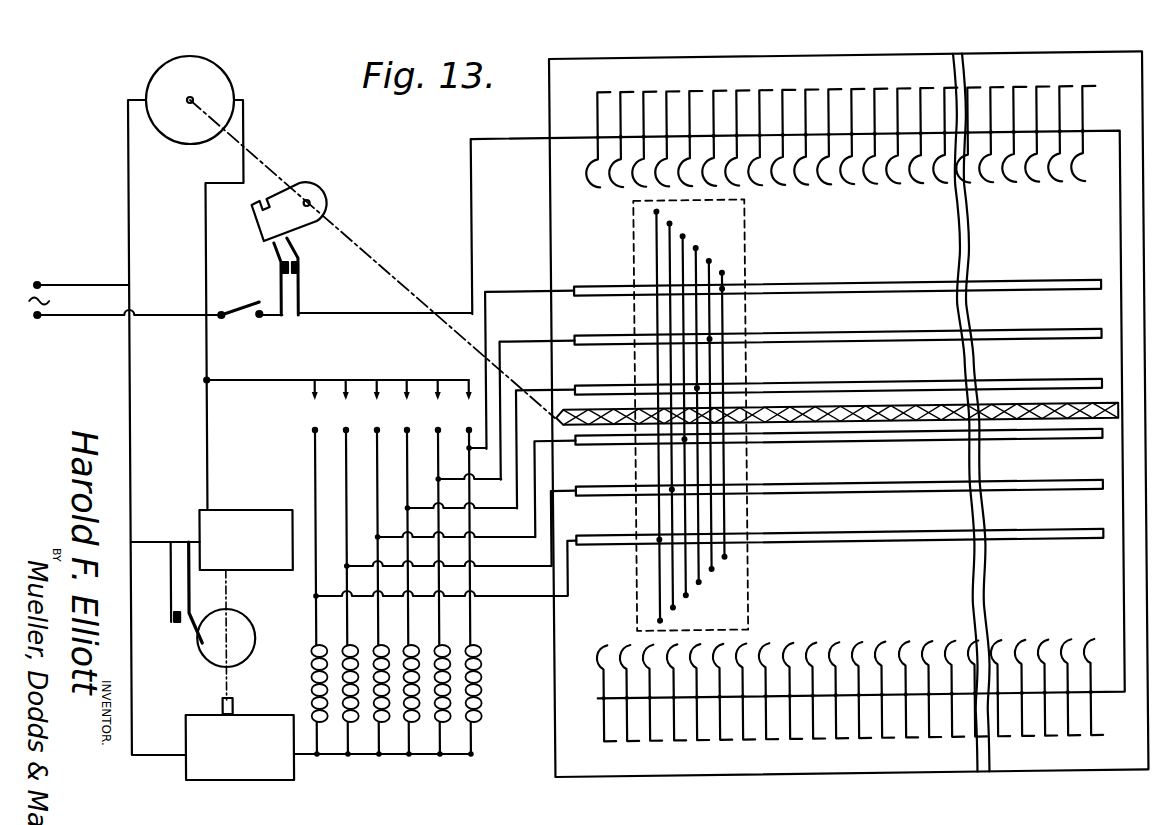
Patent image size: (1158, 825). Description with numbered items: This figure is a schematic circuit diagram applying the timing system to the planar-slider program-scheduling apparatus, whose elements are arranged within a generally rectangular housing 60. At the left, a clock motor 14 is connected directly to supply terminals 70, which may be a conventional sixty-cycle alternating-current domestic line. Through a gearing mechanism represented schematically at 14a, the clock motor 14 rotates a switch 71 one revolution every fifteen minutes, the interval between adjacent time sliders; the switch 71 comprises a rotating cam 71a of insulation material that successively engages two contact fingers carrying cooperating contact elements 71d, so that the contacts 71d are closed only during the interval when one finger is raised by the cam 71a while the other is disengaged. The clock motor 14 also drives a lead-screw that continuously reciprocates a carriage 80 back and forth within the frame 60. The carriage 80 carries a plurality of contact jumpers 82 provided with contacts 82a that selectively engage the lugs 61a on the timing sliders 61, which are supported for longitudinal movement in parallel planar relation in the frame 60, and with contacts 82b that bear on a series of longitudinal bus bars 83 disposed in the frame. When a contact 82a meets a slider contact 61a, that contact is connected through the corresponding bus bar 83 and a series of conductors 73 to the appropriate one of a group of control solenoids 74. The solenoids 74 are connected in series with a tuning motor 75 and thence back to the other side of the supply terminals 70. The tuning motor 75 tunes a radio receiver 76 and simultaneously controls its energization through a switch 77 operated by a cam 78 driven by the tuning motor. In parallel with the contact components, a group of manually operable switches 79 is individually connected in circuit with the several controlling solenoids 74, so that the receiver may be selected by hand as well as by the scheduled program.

The clock motor 14 is at (218, 80).
The gearing mechanism 14a is at (262, 168).
The supply terminals 70 is at (58, 313).
The switch 71 is at (286, 247).
The rotating cam 71a is at (322, 197).
The contact elements 71d is at (298, 284).
The conductors 73 is at (510, 540).
The control solenoids 74 is at (390, 722).
The tuning motor 75 is at (249, 780).
The radio receiver 76 is at (233, 510).
The switch 77 is at (178, 628).
The cam 78 is at (246, 627).
The manually operable switches 79 is at (388, 393).
The housing 60 is at (810, 59).
The timing sliders 61 is at (905, 90).
The lugs 61a is at (857, 191).
The carriage 80 is at (744, 245).
The contact jumpers 82 is at (683, 578).
The contacts 82a is at (720, 560).
The contacts 82b is at (720, 295).
The bus bars 83 is at (865, 537).